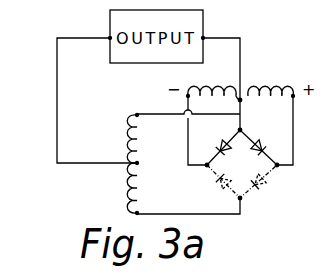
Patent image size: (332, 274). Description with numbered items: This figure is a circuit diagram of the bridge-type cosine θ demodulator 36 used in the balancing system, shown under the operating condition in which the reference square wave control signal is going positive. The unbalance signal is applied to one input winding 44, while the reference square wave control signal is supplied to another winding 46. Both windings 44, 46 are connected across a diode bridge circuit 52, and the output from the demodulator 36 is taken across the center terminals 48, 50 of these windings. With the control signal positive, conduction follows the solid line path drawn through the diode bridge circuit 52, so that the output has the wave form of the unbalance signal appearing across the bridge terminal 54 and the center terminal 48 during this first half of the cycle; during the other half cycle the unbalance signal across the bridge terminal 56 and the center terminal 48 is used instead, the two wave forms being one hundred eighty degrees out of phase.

The cosine θ demodulator 36 is at (64, 168).
The input winding 44 is at (134, 117).
The center terminal 48 is at (132, 170).
The center terminal 50 is at (242, 97).
The winding 46 is at (277, 88).
The bridge terminal 54 is at (243, 128).
The diode bridge circuit 52 is at (257, 134).
The bridge terminal 56 is at (243, 200).